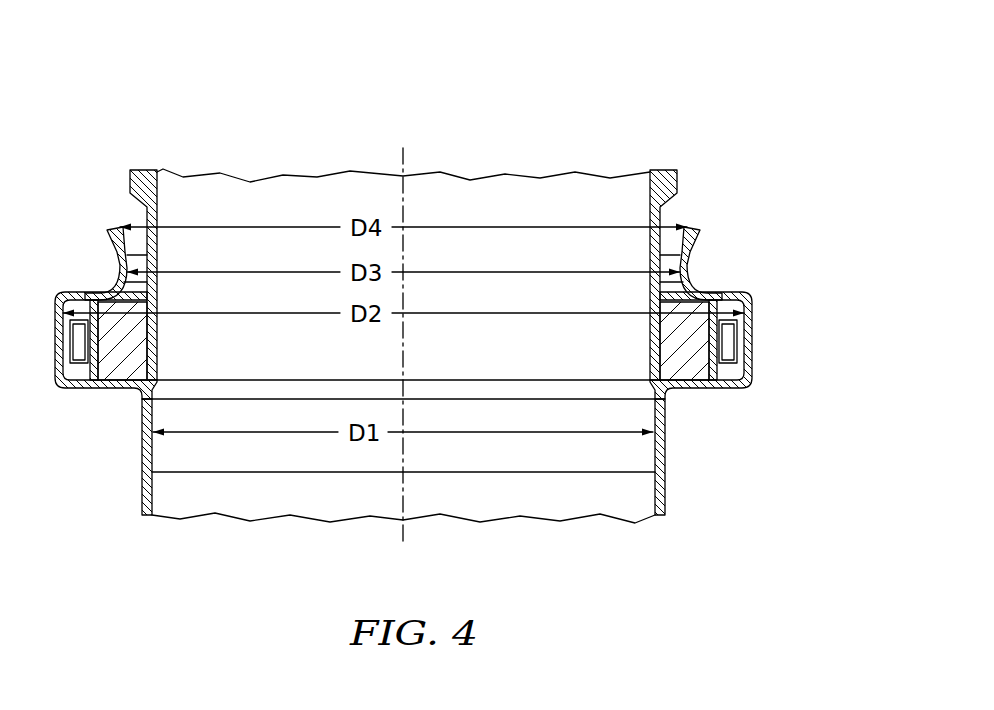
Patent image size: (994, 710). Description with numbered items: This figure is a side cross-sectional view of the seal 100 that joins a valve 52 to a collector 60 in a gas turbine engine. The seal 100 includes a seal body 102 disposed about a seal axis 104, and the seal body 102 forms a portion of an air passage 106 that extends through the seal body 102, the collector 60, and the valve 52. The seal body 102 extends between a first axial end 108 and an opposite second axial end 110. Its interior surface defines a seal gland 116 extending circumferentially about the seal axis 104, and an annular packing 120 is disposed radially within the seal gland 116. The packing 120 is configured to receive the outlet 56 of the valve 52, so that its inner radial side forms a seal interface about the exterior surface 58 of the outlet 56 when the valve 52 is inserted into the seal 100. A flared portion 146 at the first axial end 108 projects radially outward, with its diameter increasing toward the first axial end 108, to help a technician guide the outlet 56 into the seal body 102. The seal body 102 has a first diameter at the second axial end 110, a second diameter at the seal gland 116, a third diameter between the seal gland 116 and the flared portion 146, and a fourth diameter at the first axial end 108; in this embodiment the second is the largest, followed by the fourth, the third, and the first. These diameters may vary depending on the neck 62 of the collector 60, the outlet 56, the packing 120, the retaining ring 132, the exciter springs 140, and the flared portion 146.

The seal 100 is at (715, 68).
The valve 52 is at (630, 225).
The outlet 56 is at (638, 192).
The exterior surface 58 is at (682, 222).
The collector 60 is at (624, 536).
The neck 62 is at (665, 490).
The seal body 102 is at (712, 458).
The seal axis 104 is at (418, 546).
The air passage 106 is at (287, 198).
The first axial end 108 is at (102, 210).
The second axial end 110 is at (130, 472).
The seal gland 116 is at (738, 313).
The packing 120 is at (110, 352).
The retaining ring 132 is at (714, 213).
The exciter springs 140 is at (727, 342).
The flared portion 146 is at (713, 213).